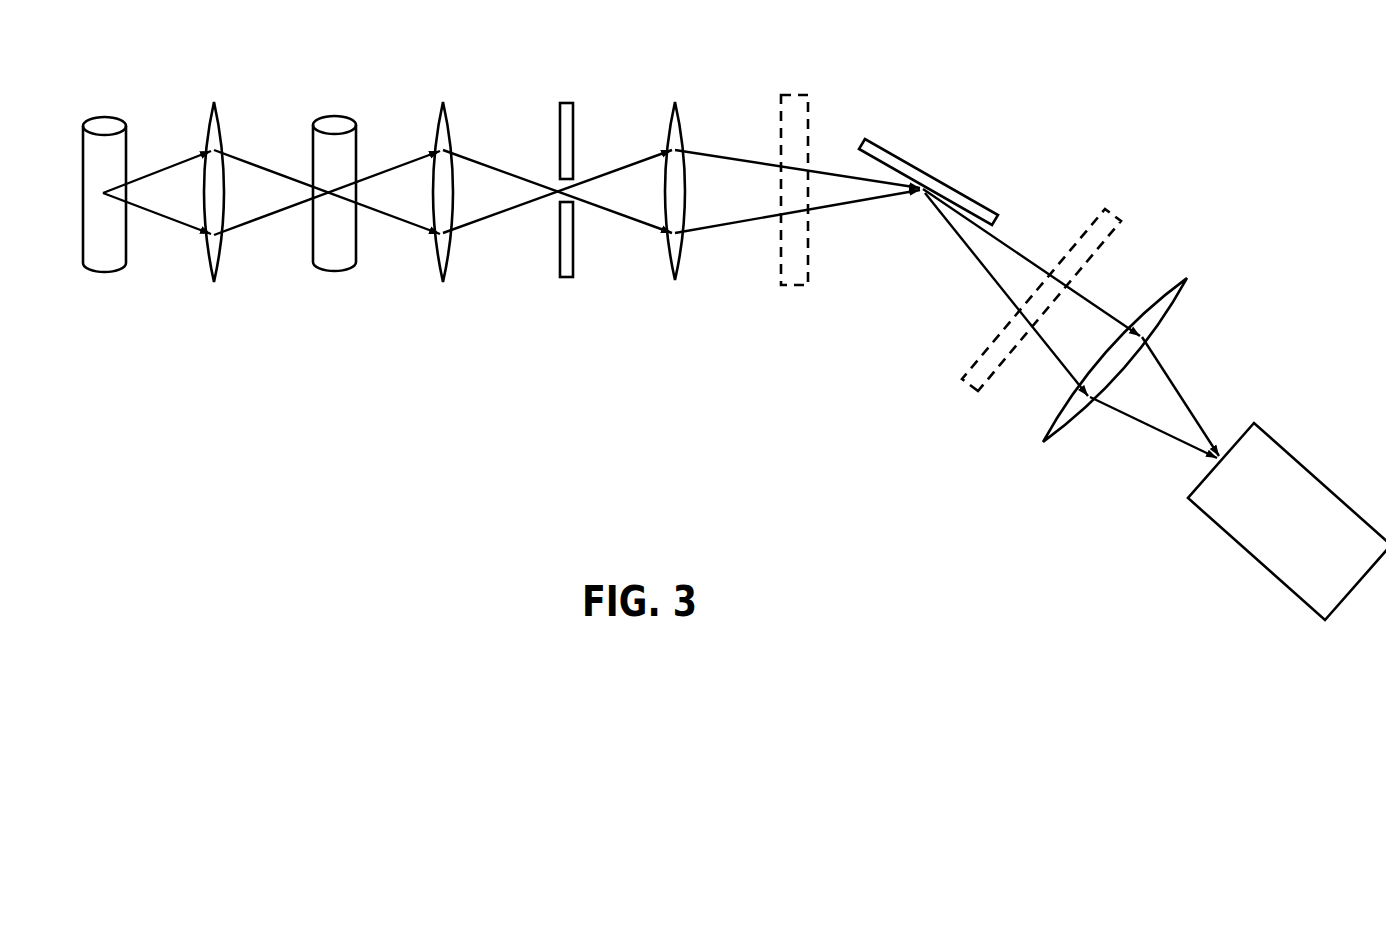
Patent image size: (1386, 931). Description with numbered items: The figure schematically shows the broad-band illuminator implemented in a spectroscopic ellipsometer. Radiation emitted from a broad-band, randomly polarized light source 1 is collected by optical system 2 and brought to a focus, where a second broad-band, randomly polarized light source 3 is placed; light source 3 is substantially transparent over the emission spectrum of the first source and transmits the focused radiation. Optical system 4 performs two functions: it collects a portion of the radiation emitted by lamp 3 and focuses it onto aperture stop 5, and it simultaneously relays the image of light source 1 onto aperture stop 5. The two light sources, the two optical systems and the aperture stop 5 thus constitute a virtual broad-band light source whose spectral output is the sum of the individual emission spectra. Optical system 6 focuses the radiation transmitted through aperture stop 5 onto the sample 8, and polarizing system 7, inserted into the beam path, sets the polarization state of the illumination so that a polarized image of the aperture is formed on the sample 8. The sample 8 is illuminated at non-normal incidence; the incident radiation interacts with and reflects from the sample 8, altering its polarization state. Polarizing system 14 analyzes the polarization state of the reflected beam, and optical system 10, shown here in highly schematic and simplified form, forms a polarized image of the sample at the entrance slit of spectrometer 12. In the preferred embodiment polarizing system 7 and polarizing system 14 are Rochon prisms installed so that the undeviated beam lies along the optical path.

The light source 1 is at (105, 116).
The optical system 2 is at (217, 113).
The light source 3 is at (332, 116).
The optical system 4 is at (448, 112).
The aperture stop 5 is at (577, 108).
The optical system 6 is at (668, 113).
The polarizing system 7 is at (802, 95).
The sample 8 is at (893, 153).
The polarizing system 14 is at (1120, 222).
The optical system 10 is at (1172, 303).
The spectrometer 12 is at (1290, 452).